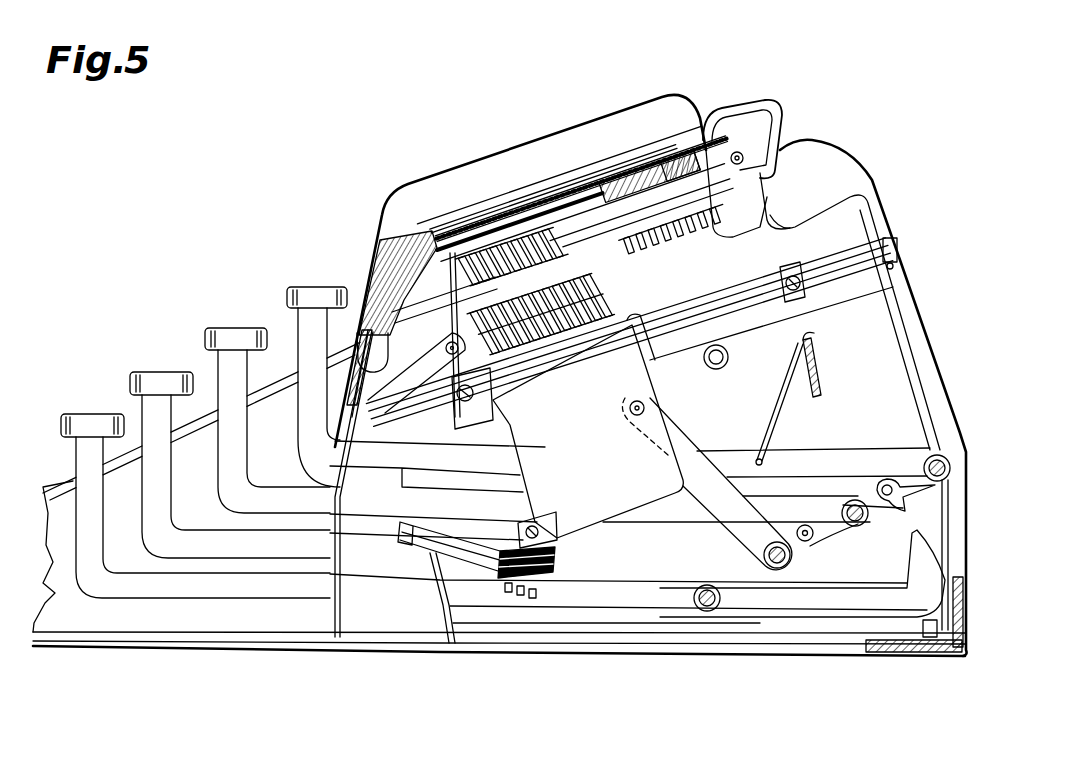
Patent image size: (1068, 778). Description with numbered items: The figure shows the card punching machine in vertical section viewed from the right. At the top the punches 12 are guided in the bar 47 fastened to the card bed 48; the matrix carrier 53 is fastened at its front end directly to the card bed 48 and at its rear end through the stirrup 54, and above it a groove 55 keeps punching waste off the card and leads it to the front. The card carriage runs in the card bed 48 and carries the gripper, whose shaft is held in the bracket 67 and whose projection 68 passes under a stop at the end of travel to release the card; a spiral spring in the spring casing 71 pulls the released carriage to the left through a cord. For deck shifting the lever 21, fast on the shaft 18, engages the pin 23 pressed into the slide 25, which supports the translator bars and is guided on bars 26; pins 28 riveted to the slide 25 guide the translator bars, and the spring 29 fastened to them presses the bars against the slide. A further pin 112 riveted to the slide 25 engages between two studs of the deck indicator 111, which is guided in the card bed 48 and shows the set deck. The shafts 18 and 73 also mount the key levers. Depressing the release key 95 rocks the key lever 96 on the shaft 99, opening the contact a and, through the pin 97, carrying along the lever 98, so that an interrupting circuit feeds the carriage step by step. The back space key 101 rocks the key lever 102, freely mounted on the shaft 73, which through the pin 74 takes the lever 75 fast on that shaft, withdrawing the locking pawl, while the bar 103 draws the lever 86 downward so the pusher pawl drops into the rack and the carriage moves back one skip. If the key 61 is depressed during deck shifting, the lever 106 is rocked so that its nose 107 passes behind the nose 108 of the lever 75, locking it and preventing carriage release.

The punches 12 is at (663, 248).
The shaft 18 is at (773, 568).
The lever 21 is at (745, 535).
The pin 23 is at (650, 405).
The slide 25 is at (605, 493).
The bars 26 is at (880, 240).
The pins 28 is at (590, 300).
The spring 29 is at (587, 275).
The bar 47 is at (487, 245).
The card bed 48 is at (380, 290).
The matrix carrier 53 is at (437, 255).
The stirrup 54 is at (757, 105).
The groove 55 is at (590, 148).
The key 61 is at (92, 420).
The bracket 67 is at (730, 150).
The projection 68 is at (765, 138).
The spring casing 71 is at (660, 220).
The shaft 73 is at (950, 462).
The pin 74 is at (905, 495).
The lever 75 is at (965, 488).
The lever 86 is at (818, 358).
The release key 95 is at (232, 328).
The key lever 96 is at (228, 395).
The pin 97 is at (805, 541).
The lever 98 is at (830, 545).
The shaft 99 is at (858, 527).
The back space key 101 is at (318, 287).
The key lever 102 is at (305, 350).
The bar 103 is at (778, 438).
The lever 106 is at (230, 590).
The nose 107 is at (932, 575).
The nose 108 is at (903, 507).
The deck indicator 111 is at (515, 228).
The pin 112 is at (425, 242).
The contact a is at (433, 580).